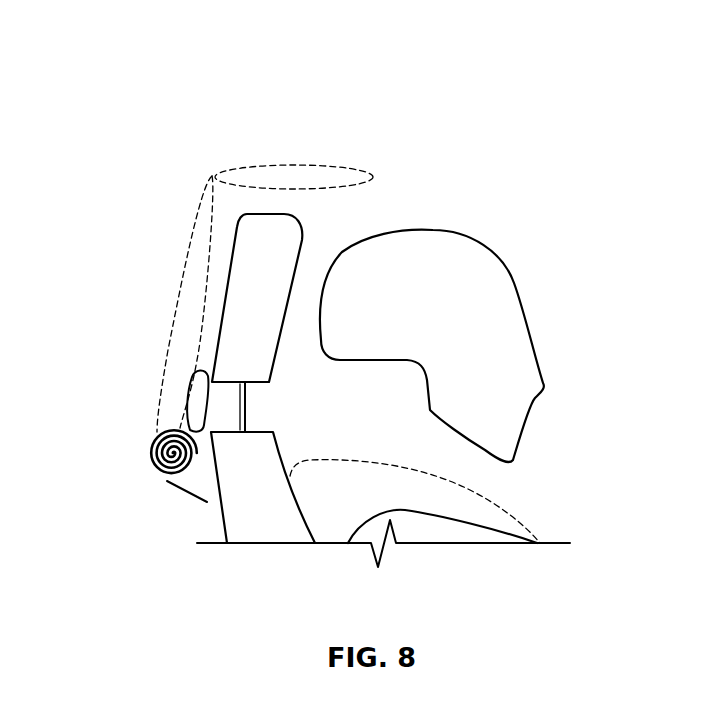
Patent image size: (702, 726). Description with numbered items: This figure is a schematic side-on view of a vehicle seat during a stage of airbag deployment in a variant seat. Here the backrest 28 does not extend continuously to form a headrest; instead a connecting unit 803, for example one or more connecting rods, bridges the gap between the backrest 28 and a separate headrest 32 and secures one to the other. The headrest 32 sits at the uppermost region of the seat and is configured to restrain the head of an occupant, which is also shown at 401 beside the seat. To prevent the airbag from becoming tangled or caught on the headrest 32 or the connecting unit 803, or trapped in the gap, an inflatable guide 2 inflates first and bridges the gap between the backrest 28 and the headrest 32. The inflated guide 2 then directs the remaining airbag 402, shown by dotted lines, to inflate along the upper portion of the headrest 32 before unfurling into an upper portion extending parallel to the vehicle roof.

The inflatable guide 2 is at (184, 402).
The backrest 28 is at (233, 508).
The headrest 32 is at (283, 214).
The occupant head 401 is at (447, 229).
The remaining airbag 402 is at (218, 174).
The connecting unit 803 is at (243, 400).